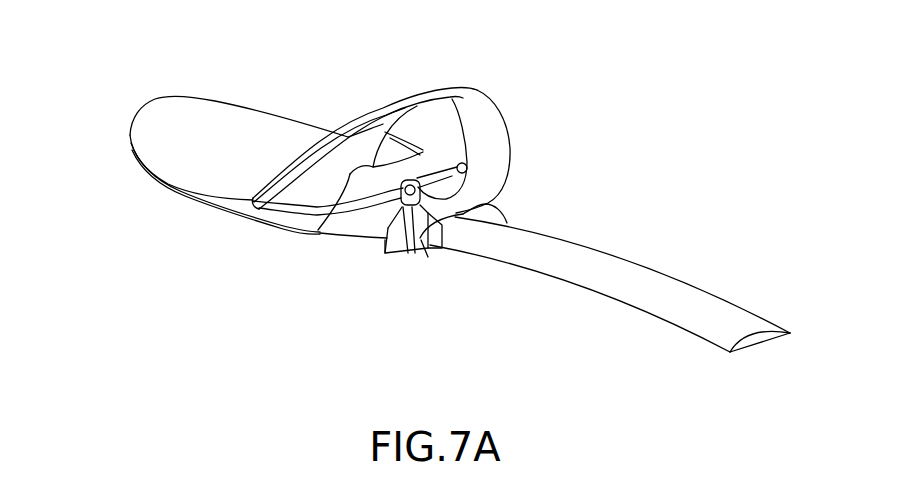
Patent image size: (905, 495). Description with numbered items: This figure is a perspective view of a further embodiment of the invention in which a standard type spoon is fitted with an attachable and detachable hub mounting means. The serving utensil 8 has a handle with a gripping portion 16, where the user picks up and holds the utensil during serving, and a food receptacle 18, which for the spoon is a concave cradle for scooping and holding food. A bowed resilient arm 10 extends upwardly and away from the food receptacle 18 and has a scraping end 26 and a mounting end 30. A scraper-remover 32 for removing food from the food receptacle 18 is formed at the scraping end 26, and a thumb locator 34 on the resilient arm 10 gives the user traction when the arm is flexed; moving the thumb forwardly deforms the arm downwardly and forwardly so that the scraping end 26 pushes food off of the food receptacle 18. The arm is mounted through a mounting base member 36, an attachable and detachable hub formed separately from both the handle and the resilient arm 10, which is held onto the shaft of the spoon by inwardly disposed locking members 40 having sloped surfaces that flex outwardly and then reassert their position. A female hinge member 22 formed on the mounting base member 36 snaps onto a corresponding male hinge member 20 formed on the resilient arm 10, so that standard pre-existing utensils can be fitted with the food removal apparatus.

The serving utensil 8 is at (482, 292).
The resilient arm 10 is at (566, 146).
The gripping portion 16 is at (613, 263).
The food receptacle 18 is at (233, 148).
The male hinge member 20 is at (390, 240).
The female hinge member 22 is at (407, 253).
The scraping end 26 is at (302, 233).
The mounting end 30 is at (440, 173).
The scraper-remover 32 is at (303, 177).
The thumb locator 34 is at (476, 103).
The mounting base member 36 is at (384, 243).
The locking member 40 is at (437, 238).